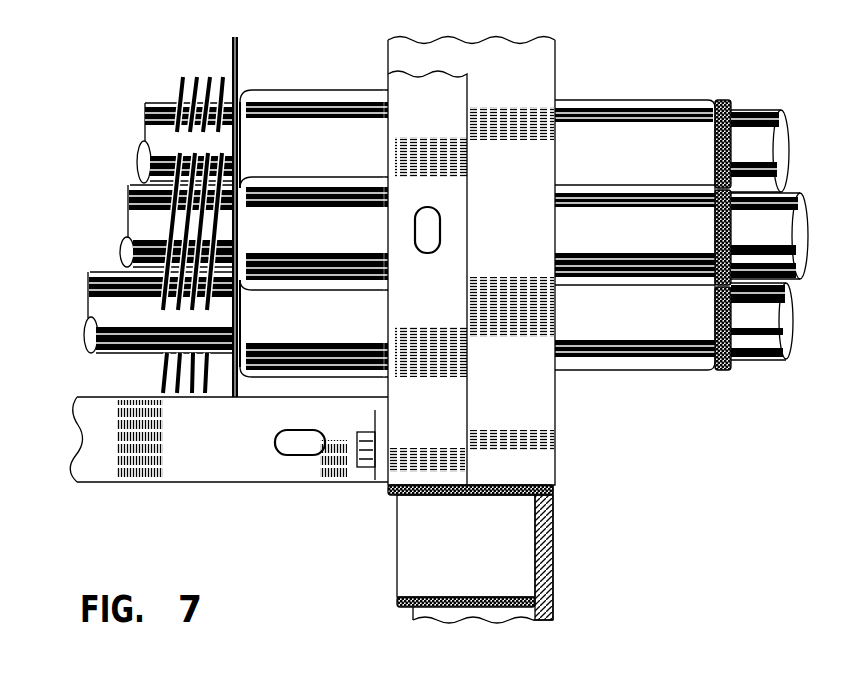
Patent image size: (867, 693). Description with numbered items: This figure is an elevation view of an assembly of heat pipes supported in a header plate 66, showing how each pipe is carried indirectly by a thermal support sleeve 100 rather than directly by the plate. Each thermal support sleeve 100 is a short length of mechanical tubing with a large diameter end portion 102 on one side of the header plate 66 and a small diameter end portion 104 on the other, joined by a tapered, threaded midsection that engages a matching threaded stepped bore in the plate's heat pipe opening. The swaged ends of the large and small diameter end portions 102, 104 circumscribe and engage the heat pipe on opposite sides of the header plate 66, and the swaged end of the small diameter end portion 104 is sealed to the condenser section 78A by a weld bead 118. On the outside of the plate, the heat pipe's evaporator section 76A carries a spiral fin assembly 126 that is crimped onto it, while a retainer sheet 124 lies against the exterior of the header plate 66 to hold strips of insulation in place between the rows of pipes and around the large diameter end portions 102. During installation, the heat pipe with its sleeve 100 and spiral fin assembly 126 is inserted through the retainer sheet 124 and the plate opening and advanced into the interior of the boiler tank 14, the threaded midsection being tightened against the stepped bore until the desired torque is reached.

The boiler tank 14 is at (555, 530).
The header plate 66 is at (566, 464).
The evaporator section 76A is at (108, 304).
The condenser section 78A is at (755, 355).
The thermal support sleeve 100 is at (324, 85).
The large diameter end portion 102 is at (370, 130).
The small diameter end portion 104 is at (696, 100).
The weld bead 118 is at (715, 156).
The retainer sheet 124 is at (232, 47).
The spiral fin assembly 126 is at (158, 230).